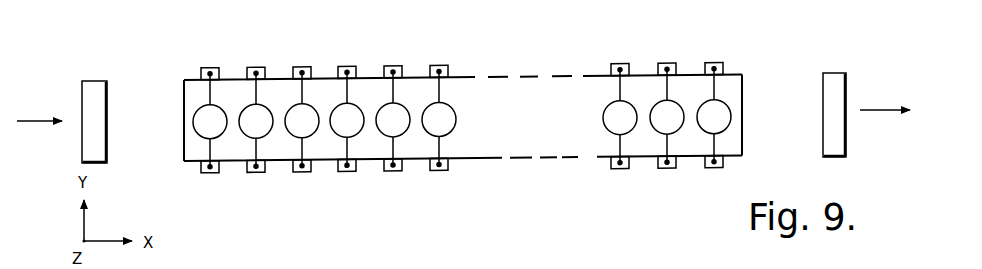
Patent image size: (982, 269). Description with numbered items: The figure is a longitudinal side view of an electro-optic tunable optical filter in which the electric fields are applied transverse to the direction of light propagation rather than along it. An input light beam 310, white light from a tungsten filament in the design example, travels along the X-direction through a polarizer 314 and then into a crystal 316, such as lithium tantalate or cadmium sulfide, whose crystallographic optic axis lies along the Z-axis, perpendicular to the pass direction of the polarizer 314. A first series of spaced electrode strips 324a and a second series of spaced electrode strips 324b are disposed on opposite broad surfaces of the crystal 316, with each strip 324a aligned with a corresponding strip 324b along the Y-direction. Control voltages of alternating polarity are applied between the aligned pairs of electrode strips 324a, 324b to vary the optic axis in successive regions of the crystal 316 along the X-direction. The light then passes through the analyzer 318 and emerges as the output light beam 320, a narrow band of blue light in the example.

The input light beam 310 is at (48, 120).
The polarizer 314 is at (101, 87).
The crystal 316 is at (490, 165).
The analyzer 318 is at (834, 80).
The output light beam 320 is at (876, 110).
The first series of spaced electrode strips 324a is at (215, 67).
The second series of spaced electrode strips 324b is at (300, 174).